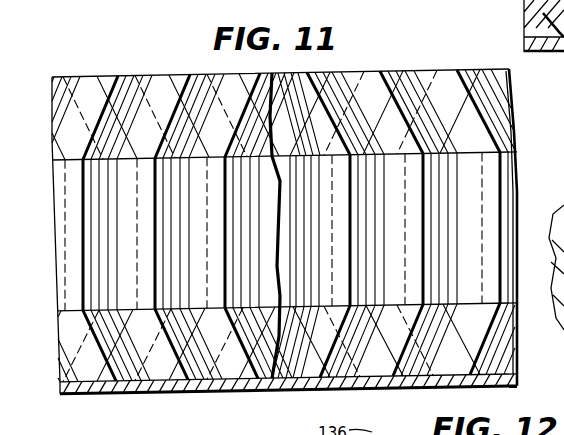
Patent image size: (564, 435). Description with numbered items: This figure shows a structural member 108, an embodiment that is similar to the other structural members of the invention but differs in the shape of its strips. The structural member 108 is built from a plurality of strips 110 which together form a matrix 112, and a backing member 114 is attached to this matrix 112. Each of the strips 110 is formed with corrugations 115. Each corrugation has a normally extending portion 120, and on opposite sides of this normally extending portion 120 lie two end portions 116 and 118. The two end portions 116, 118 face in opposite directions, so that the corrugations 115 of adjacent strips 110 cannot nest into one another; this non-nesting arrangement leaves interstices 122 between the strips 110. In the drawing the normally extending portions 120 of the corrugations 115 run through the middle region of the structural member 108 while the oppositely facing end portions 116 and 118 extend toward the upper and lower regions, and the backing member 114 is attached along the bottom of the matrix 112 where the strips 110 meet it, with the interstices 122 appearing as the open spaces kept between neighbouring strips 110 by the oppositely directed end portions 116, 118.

The structural member 108 is at (282, 219).
The strips 110 is at (266, 92).
The matrix 112 is at (188, 62).
The backing member 114 is at (288, 404).
The corrugations 115 is at (73, 258).
The end portion 116 is at (98, 118).
The end portion 118 is at (90, 328).
The normally extending portion 120 is at (286, 218).
The interstices 122 is at (247, 390).